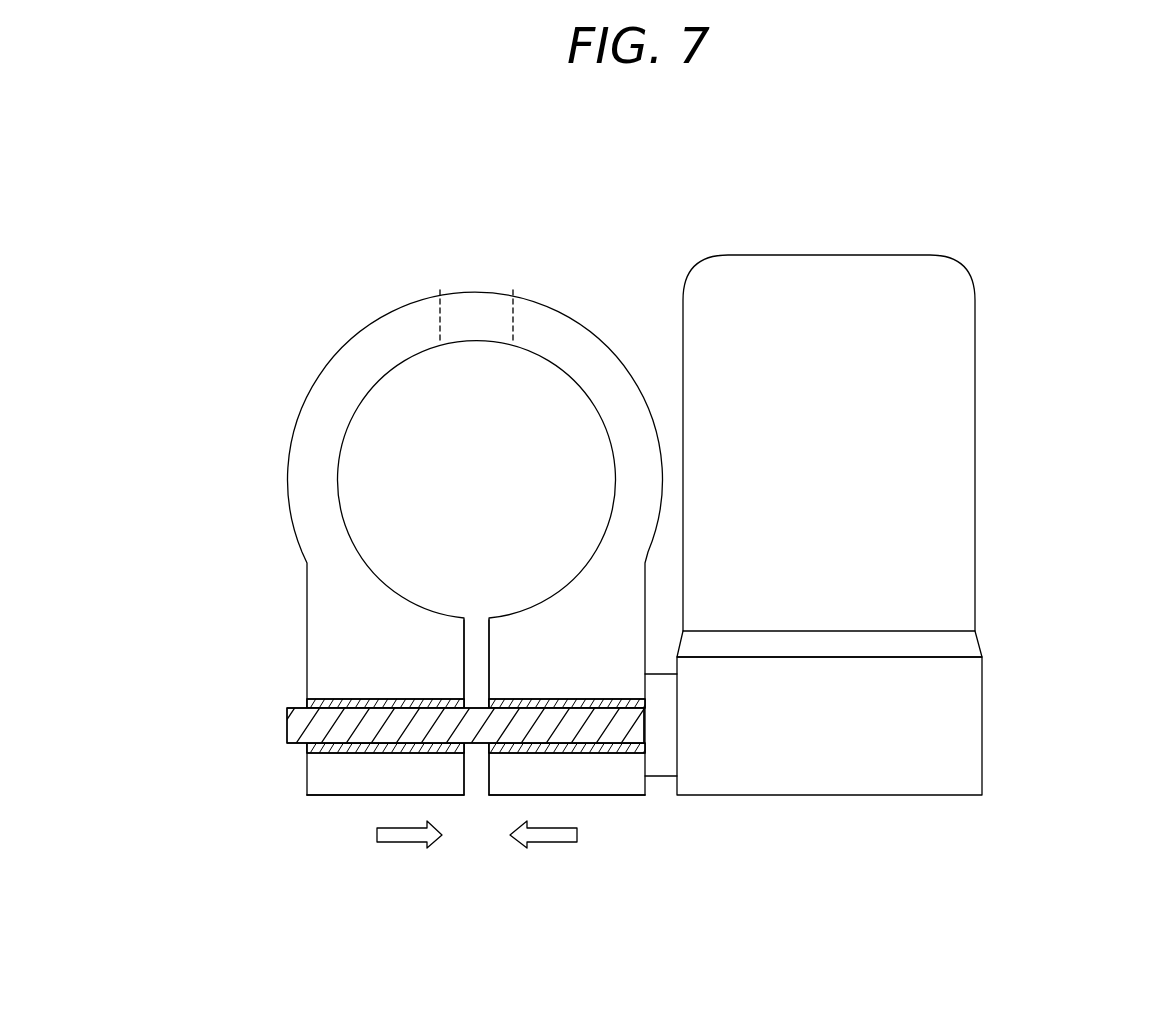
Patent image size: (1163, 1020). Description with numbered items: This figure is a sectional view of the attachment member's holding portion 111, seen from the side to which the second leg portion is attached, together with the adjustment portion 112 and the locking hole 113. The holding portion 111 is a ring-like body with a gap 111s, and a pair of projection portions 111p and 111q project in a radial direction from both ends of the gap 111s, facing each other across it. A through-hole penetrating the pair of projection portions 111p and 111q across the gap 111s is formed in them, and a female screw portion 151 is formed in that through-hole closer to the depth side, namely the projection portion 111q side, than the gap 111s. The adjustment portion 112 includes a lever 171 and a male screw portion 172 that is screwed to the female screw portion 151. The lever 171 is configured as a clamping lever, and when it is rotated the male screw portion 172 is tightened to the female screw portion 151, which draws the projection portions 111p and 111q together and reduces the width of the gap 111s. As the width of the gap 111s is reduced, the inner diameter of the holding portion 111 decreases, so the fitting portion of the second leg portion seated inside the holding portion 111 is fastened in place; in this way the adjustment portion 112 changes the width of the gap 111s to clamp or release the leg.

The holding portion 111 is at (298, 420).
The locking hole 113 is at (475, 278).
The gap 111s is at (477, 612).
The projection portion 111q is at (345, 777).
The projection portion 111p is at (612, 777).
The female screw portion 151 is at (337, 700).
The male screw portion 172 is at (298, 722).
The adjustment portion 112 is at (894, 525).
The lever 171 is at (975, 588).